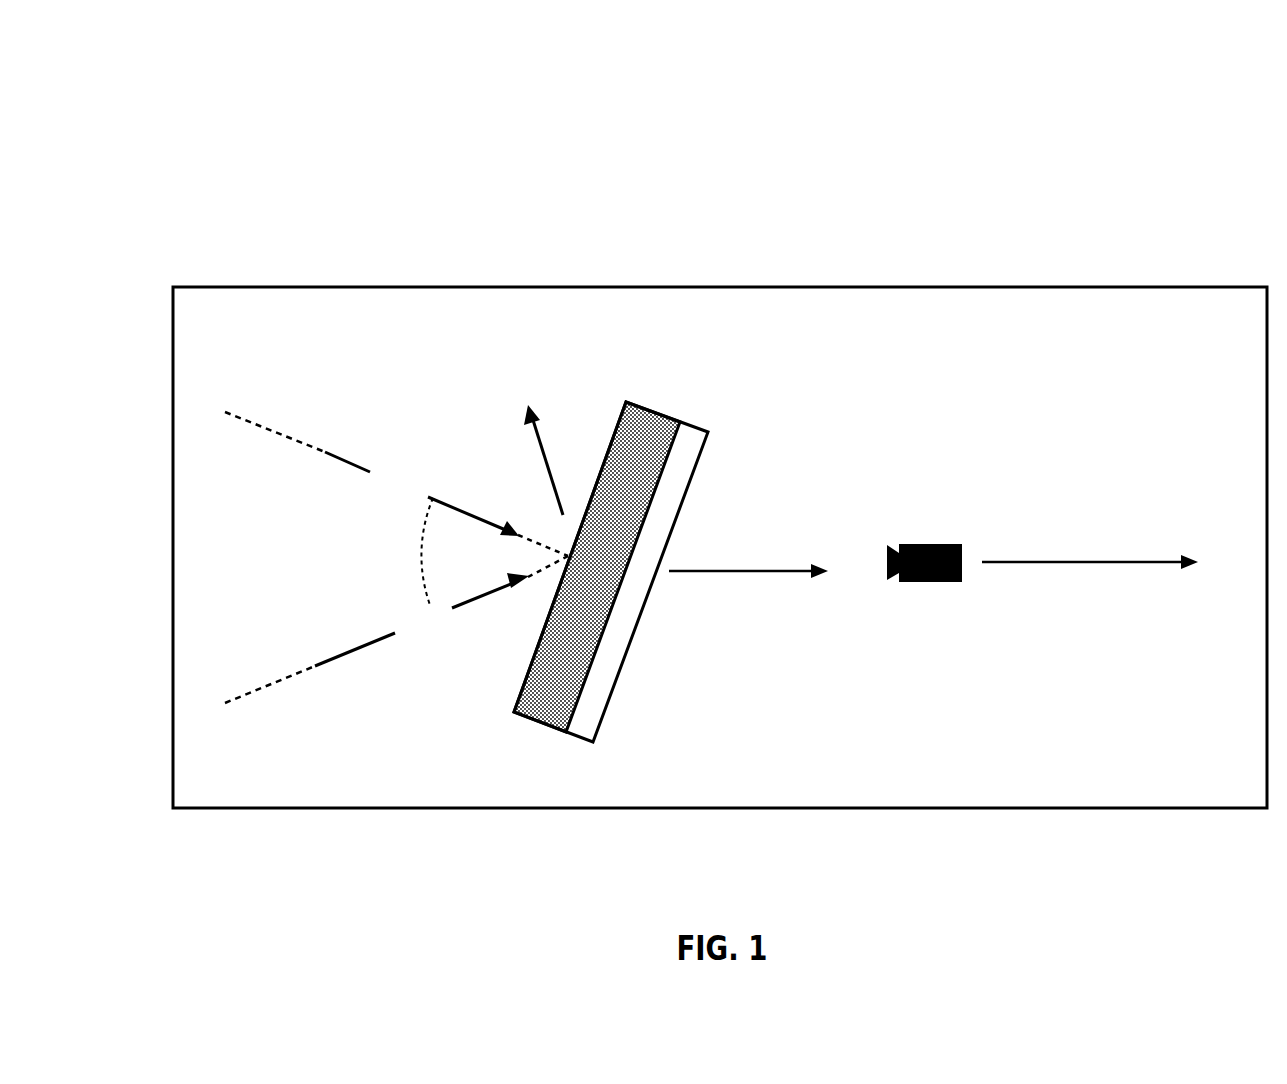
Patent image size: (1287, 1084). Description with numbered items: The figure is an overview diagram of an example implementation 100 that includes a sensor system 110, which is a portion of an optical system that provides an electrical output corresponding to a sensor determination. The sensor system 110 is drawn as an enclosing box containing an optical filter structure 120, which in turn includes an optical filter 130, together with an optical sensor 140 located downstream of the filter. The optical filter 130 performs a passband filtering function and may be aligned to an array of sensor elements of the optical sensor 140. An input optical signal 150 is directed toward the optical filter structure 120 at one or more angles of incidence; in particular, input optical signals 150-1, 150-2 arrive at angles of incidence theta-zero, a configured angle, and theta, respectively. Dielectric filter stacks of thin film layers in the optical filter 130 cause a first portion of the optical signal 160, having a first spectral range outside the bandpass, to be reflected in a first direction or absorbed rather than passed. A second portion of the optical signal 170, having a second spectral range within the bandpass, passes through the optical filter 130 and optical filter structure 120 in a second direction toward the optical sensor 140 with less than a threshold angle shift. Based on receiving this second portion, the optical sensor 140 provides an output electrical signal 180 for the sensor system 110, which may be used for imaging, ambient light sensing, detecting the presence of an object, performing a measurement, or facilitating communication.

The example implementation 100 is at (233, 64).
The sensor system 110 is at (802, 287).
The optical filter structure 120 is at (596, 589).
The optical filter 130 is at (533, 718).
The optical sensor 140 is at (931, 544).
The input optical signal 150 is at (396, 557).
The input optical signal 150-1 is at (396, 484).
The input optical signal 150-2 is at (396, 629).
The first portion of the optical signal 160 is at (501, 407).
The second portion of the optical signal 170 is at (759, 609).
The output electrical signal 180 is at (1090, 521).